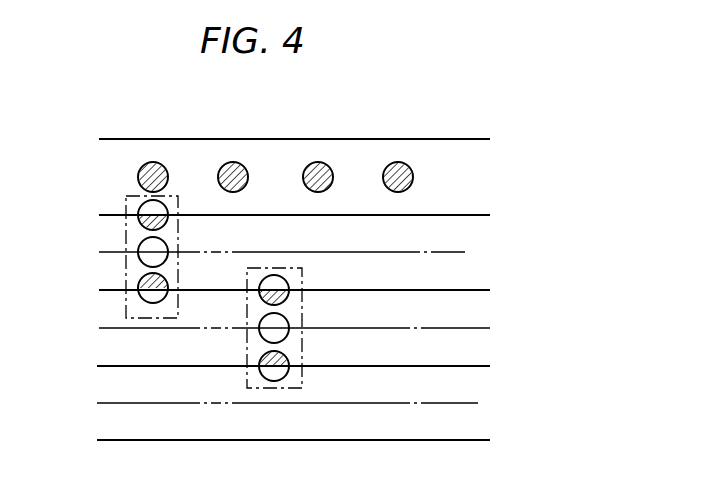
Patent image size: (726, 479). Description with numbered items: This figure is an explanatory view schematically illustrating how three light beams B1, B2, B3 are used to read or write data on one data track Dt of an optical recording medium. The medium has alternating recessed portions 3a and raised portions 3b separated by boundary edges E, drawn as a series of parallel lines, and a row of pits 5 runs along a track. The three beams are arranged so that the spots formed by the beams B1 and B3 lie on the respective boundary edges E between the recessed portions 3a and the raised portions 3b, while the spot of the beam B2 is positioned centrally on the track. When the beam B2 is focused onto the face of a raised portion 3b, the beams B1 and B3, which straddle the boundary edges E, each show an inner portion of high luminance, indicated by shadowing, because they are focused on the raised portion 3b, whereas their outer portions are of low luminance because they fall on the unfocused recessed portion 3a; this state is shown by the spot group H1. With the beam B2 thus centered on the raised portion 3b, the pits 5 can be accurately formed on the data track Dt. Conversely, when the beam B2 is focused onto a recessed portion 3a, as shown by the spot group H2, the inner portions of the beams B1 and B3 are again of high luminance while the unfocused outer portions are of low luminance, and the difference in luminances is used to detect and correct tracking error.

The pits 5 is at (152, 162).
The spot group position on raised portion H1 is at (176, 196).
The spot group position on recessed portion H2 is at (258, 388).
The light beam B1 is at (140, 208).
The light beam B2 is at (140, 250).
The light beam B3 is at (140, 293).
The boundary edge E is at (455, 139).
The data track Dt is at (355, 178).
The recessed portion 3a is at (481, 165).
The raised portion 3b is at (478, 270).